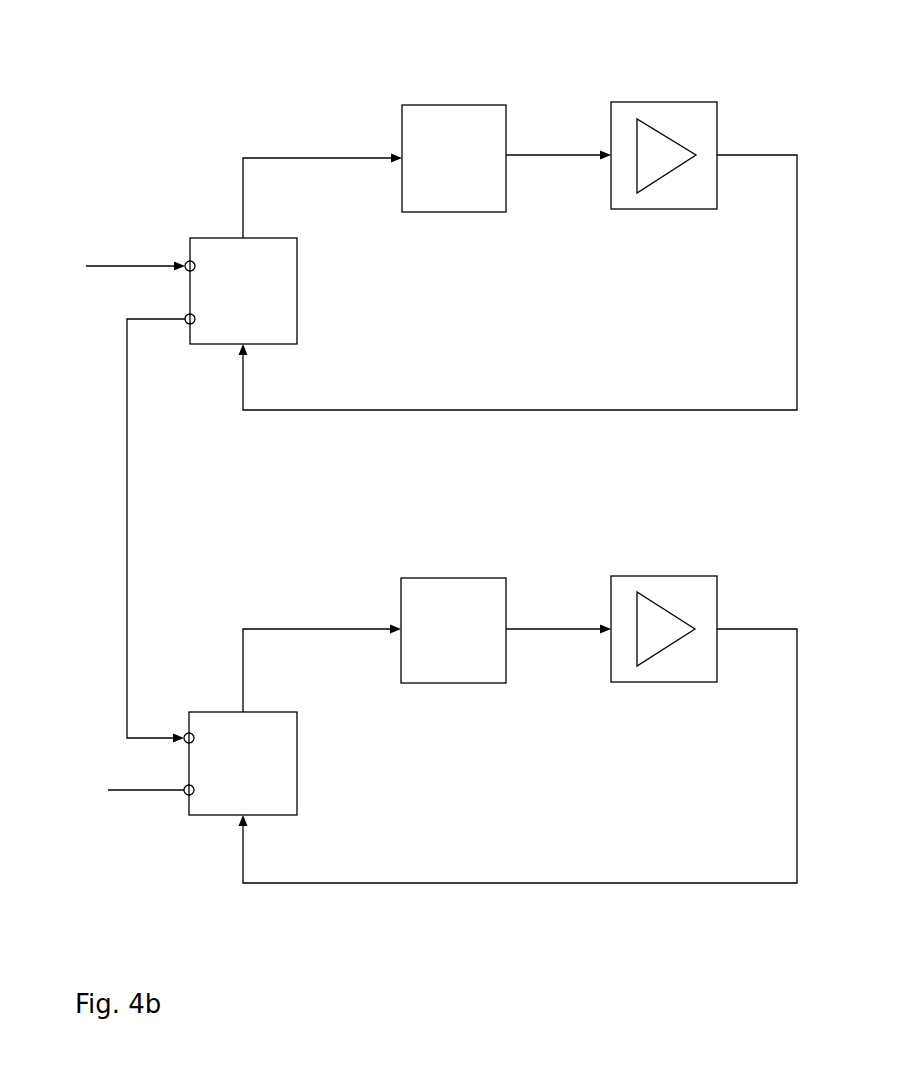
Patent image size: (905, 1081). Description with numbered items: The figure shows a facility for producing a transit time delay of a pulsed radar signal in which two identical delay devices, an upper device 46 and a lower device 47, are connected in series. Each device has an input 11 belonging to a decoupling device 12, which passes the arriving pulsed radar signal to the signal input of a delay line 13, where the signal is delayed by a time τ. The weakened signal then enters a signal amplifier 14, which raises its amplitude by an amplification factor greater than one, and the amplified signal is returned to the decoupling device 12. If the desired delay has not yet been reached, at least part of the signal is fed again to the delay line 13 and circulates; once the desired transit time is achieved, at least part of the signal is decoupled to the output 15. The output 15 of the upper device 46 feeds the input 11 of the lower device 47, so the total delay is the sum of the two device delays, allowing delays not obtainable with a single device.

The input 11 is at (178, 266).
The decoupling device 12 is at (250, 280).
The delay line 13 is at (442, 117).
The signal amplifier 14 is at (697, 123).
The output 15 is at (183, 319).
The upper device 46 is at (518, 281).
The lower device 47 is at (518, 754).